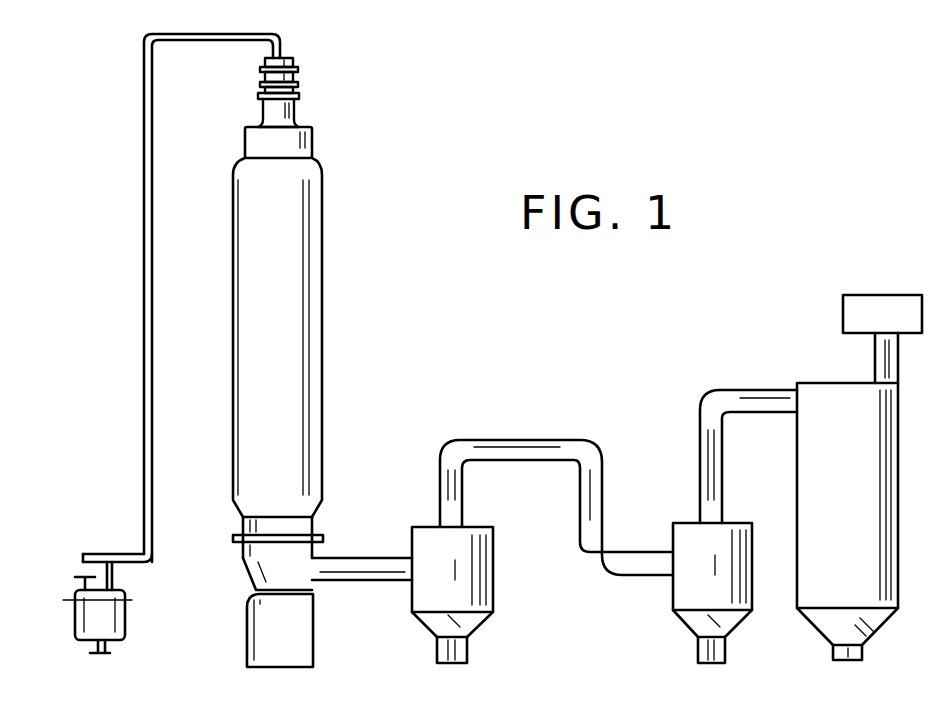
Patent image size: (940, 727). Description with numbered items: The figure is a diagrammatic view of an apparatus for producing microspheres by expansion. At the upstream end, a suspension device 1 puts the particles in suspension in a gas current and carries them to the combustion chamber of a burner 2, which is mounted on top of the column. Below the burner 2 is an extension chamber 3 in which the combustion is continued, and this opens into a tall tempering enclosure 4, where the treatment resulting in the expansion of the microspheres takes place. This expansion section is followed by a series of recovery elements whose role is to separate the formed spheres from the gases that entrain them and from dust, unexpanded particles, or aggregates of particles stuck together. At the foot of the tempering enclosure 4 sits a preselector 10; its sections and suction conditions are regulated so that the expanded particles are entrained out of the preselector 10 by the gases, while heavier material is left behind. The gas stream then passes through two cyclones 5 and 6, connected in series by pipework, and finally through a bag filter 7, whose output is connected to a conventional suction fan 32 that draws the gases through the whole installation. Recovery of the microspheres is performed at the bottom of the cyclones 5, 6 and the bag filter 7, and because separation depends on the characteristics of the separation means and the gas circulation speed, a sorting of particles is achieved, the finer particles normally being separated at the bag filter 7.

The suspension device 1 is at (125, 623).
The burner 2 is at (293, 73).
The extension chamber 3 is at (295, 112).
The tempering enclosure 4 is at (287, 329).
The cyclone 5 is at (492, 583).
The cyclone 6 is at (682, 598).
The bag filter 7 is at (858, 512).
The preselector 10 is at (258, 629).
The suction fan 32 is at (843, 318).